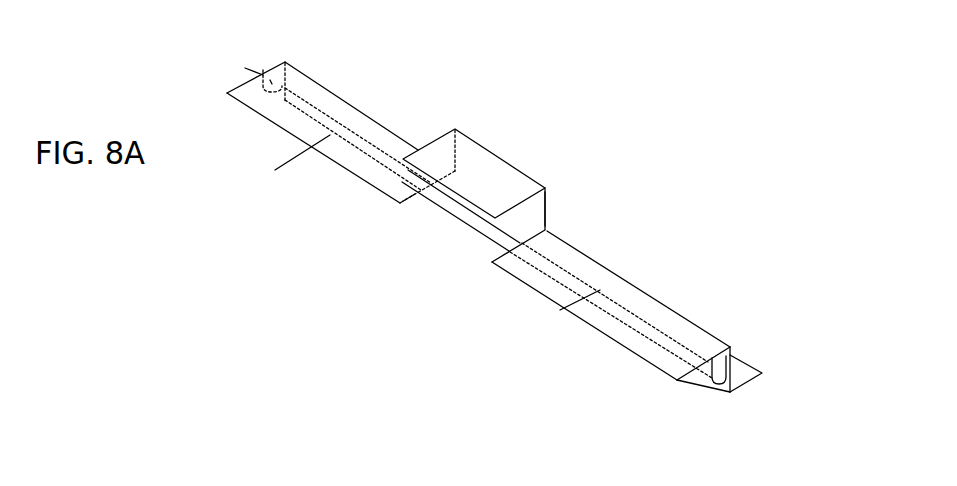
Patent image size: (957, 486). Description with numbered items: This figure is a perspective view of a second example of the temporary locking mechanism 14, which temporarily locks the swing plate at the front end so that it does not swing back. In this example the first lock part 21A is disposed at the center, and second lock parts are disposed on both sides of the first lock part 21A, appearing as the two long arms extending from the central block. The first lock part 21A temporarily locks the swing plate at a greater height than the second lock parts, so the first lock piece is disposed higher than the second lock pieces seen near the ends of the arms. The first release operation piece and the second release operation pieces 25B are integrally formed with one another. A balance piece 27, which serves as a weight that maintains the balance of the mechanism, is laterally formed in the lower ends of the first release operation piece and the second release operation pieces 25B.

The temporary locking mechanism 14 is at (628, 69).
The first lock part 21A is at (507, 154).
The second release operation piece 25B is at (548, 203).
The balance piece 27 is at (760, 380).